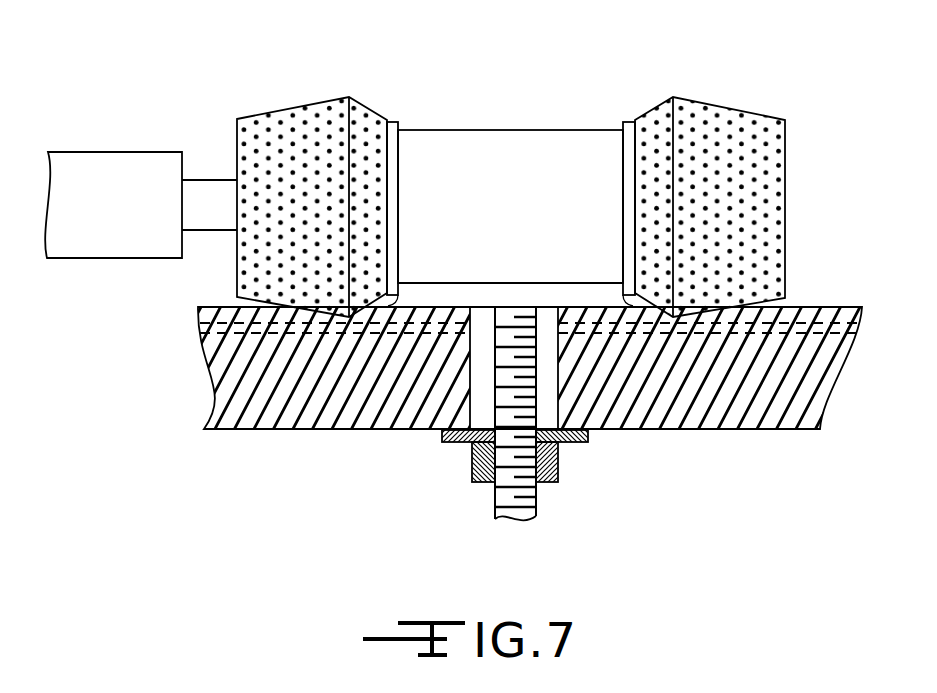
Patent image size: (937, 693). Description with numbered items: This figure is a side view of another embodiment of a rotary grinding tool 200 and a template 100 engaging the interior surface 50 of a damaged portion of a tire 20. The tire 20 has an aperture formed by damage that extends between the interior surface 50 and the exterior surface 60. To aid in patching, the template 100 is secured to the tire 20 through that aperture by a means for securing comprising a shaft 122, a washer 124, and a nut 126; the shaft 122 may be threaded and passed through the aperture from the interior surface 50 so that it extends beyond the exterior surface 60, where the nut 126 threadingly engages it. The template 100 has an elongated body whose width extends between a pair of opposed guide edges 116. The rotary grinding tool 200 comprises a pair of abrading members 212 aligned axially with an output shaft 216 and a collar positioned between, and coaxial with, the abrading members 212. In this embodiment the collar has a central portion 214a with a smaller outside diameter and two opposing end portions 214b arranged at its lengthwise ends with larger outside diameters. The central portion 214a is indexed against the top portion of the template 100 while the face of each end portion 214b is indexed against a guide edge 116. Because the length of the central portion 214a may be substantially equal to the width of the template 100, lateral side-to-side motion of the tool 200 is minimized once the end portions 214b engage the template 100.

The tire 20 is at (838, 372).
The interior surface 50 is at (820, 308).
The exterior surface 60 is at (727, 431).
The template 100 is at (510, 296).
The guide edges 116 is at (370, 318).
The shaft 122 is at (537, 509).
The washer 124 is at (589, 437).
The nut 126 is at (559, 468).
The rotary grinding tool 200 is at (107, 139).
The abrading members 212 is at (307, 100).
The central portion 214a is at (490, 130).
The end portions 214b is at (398, 120).
The drive shaft 216 is at (205, 180).